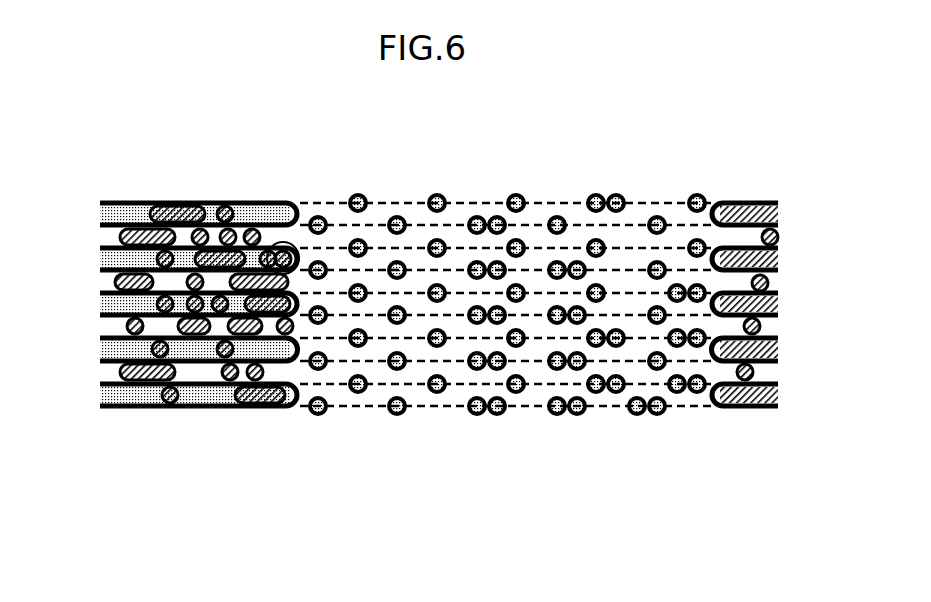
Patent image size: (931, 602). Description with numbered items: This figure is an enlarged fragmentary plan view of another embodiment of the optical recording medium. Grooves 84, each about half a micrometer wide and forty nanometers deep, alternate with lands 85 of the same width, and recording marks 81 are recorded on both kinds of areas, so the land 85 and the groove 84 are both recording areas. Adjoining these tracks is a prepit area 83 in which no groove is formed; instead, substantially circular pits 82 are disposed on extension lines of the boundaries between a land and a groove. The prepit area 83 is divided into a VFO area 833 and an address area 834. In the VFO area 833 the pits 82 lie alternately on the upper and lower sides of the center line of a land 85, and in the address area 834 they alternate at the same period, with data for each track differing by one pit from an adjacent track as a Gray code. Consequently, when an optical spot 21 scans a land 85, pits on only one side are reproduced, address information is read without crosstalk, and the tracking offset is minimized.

The optical spot 21 is at (298, 243).
The recording marks 81 is at (173, 200).
The pits 82 is at (397, 215).
The prepit area 83 is at (297, 500).
The grooves 84 is at (100, 210).
The lands 85 is at (108, 237).
The VFO area 833 is at (487, 433).
The address area 834 is at (487, 433).